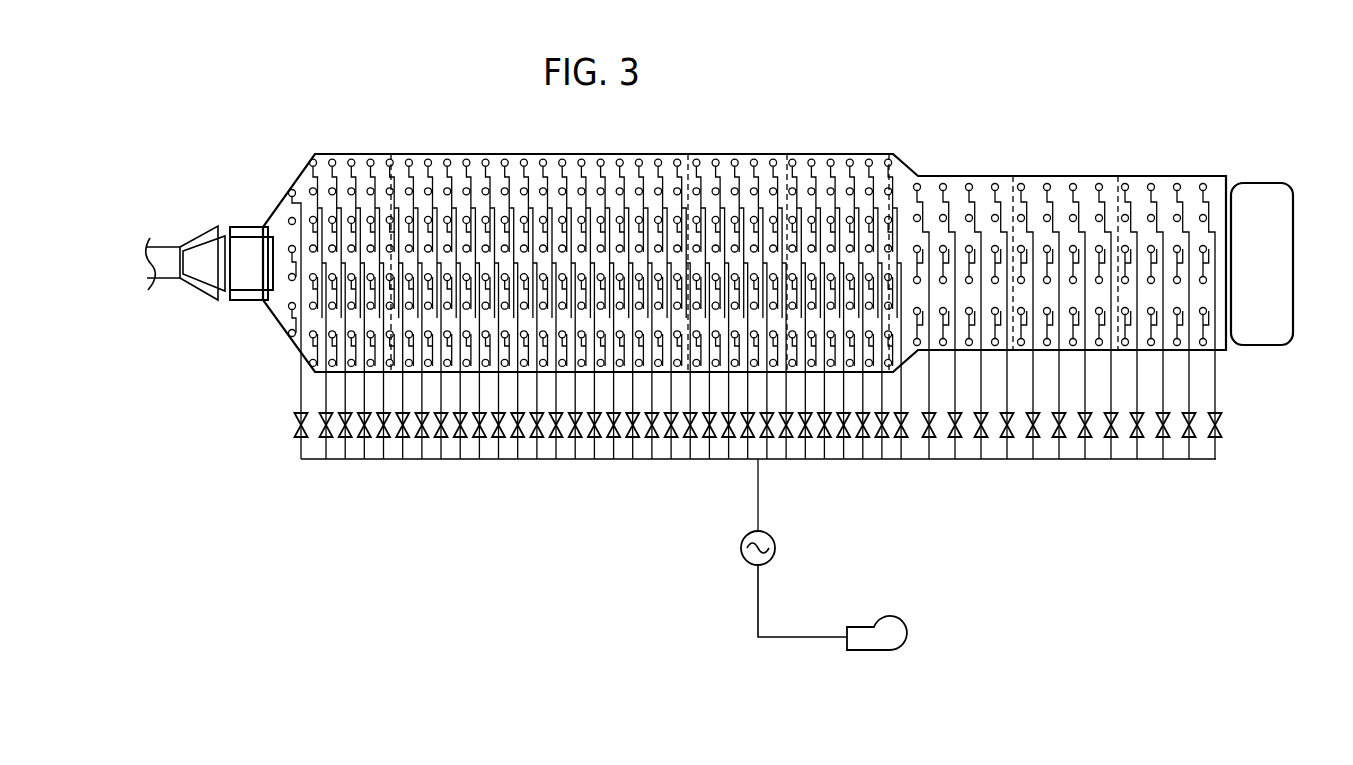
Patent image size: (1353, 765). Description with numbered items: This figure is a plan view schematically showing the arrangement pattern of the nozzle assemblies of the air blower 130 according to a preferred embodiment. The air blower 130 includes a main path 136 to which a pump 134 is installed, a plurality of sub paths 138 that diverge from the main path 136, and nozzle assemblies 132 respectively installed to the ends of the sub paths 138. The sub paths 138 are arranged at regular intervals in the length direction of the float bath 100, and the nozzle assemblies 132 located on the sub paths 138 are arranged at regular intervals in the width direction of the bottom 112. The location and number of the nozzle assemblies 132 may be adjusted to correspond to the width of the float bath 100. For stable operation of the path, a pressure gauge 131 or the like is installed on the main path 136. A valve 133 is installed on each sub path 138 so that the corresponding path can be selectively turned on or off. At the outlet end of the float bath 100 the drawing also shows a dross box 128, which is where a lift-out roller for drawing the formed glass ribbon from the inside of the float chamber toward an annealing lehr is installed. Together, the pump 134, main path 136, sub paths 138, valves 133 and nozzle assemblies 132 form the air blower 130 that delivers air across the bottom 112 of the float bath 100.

The float bath 100 is at (314, 521).
The bottom 112 is at (944, 170).
The dross box 128 is at (1291, 232).
The air blower 130 is at (414, 469).
The pressure gauge 131 is at (776, 542).
The nozzle assembly 132 is at (1060, 188).
The valve 133 is at (1222, 430).
The pump 134 is at (872, 652).
The main path 136 is at (758, 612).
The sub path 138 is at (1216, 380).